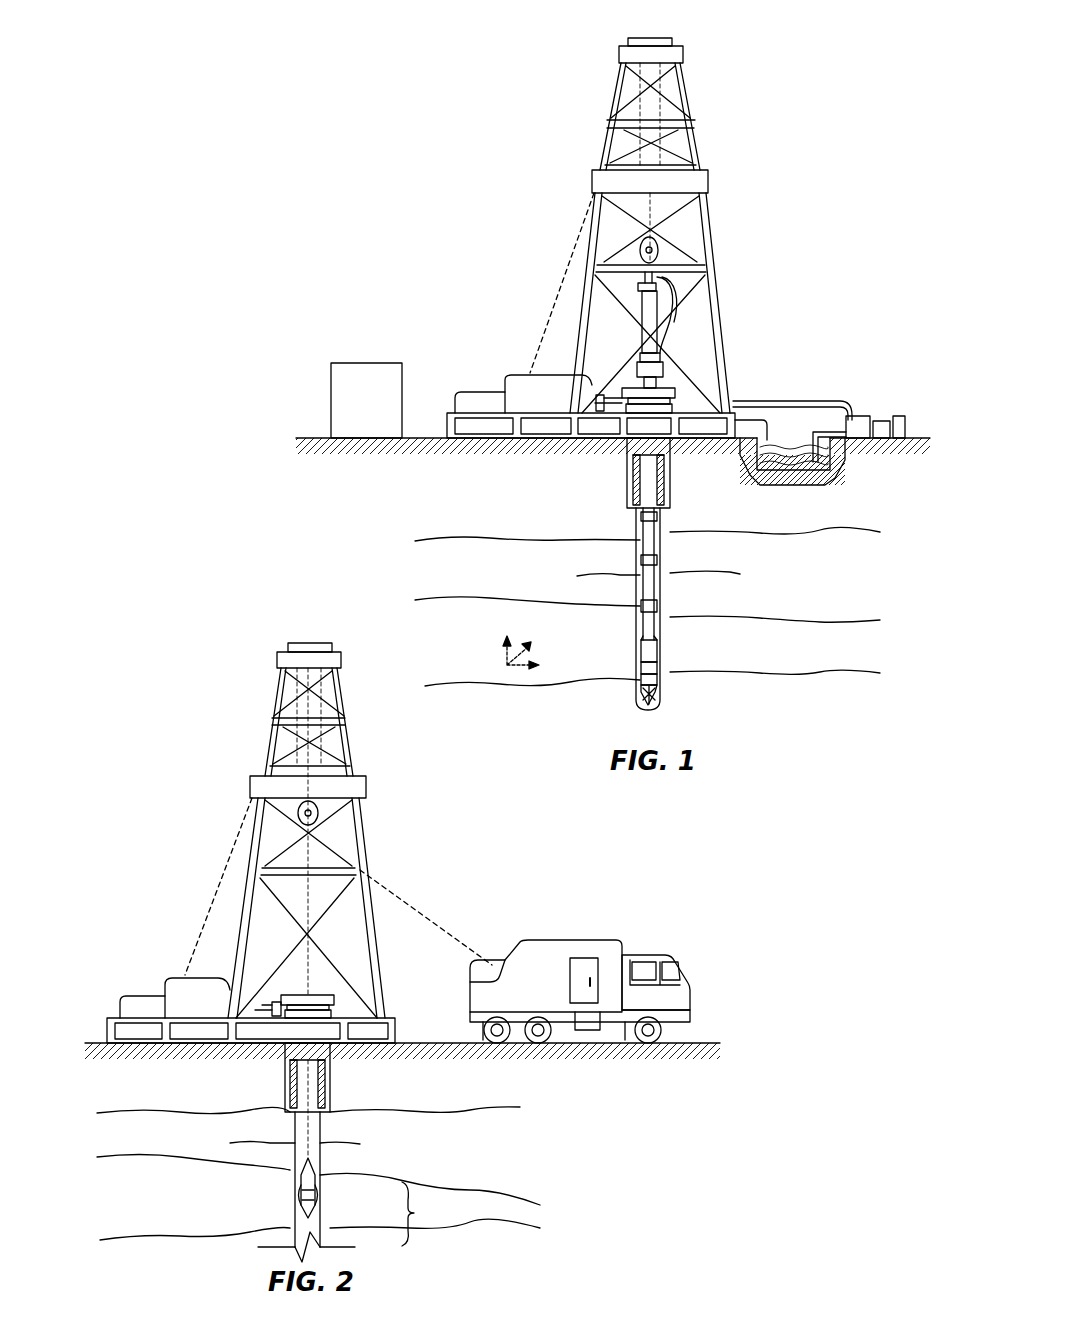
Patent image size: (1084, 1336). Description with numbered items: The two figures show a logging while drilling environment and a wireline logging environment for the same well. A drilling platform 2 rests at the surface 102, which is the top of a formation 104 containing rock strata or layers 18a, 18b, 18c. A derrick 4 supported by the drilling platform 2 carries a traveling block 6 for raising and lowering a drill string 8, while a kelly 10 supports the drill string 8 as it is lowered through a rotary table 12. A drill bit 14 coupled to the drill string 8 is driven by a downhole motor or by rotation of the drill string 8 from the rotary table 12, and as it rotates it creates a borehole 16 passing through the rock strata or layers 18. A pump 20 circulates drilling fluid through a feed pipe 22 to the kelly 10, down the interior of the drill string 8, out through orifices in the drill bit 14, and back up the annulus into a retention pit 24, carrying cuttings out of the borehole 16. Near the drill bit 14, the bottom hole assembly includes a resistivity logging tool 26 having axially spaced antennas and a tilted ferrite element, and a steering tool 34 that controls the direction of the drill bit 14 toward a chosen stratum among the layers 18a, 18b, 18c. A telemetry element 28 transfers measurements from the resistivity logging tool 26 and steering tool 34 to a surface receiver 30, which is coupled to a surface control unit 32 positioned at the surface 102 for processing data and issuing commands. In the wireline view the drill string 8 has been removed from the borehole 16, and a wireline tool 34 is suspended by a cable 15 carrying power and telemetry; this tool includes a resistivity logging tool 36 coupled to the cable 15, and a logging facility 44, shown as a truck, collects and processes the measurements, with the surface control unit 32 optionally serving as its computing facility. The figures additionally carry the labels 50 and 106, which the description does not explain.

In FIG. 1, the drilling platform 2 is at (447, 423).
In FIG. 2, the drilling platform 2 is at (395, 1030).
In FIG. 1, the derrick 4 is at (683, 117).
In FIG. 2, the derrick 4 is at (375, 955).
In FIG. 1, the traveling block 6 is at (653, 250).
In FIG. 2, the traveling block 6 is at (312, 813).
In FIG. 1, the drill string 8 is at (649, 545).
In FIG. 1, the kelly 10 is at (650, 330).
In FIG. 1, the rotary table 12 is at (668, 393).
In FIG. 2, the rotary table 12 is at (330, 1002).
In FIG. 1, the drill bit 14 is at (650, 706).
In FIG. 2, the cable 15 is at (302, 1076).
In FIG. 1, the borehole 16 is at (665, 563).
In FIG. 2, the borehole 16 is at (322, 1132).
In FIG. 2, the rock strata or layers 18 is at (423, 1214).
In FIG. 1, the formation stratum 18a is at (647, 617).
In FIG. 2, the formation stratum 18a is at (308, 1092).
In FIG. 1, the formation stratum 18b is at (647, 552).
In FIG. 2, the formation stratum 18b is at (318, 1164).
In FIG. 1, the formation stratum 18c is at (652, 592).
In FIG. 2, the formation stratum 18c is at (320, 1220).
In FIG. 1, the pump 20 is at (860, 416).
In FIG. 1, the feed pipe 22 is at (790, 400).
In FIG. 1, the retention pit 24 is at (765, 462).
In FIG. 1, the resistivity logging tool 26 is at (645, 667).
In FIG. 1, the telemetry element 28 is at (650, 651).
In FIG. 1, the surface receiver 30 is at (655, 358).
In FIG. 1, the surface control unit 32 is at (366, 400).
In FIG. 1, the steering tool 34 is at (650, 680).
In FIG. 2, the steering tool 34 is at (302, 1178).
In FIG. 2, the resistivity logging tool 36 is at (300, 1192).
In FIG. 2, the logging facility 44 is at (560, 940).
In FIG. 1, the coordinate system 50 is at (491, 654).
In FIG. 1, the surface 102 is at (296, 440).
In FIG. 2, the surface 102 is at (90, 1040).
In FIG. 1, the formation 104 is at (365, 448).
In FIG. 2, the formation 104 is at (160, 1055).
In FIG. 1, the formation boundary 106 is at (715, 573).
In FIG. 2, the formation boundary 106 is at (378, 1144).